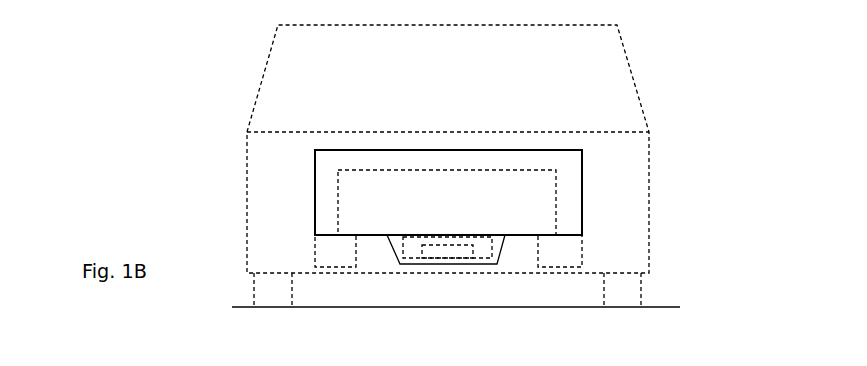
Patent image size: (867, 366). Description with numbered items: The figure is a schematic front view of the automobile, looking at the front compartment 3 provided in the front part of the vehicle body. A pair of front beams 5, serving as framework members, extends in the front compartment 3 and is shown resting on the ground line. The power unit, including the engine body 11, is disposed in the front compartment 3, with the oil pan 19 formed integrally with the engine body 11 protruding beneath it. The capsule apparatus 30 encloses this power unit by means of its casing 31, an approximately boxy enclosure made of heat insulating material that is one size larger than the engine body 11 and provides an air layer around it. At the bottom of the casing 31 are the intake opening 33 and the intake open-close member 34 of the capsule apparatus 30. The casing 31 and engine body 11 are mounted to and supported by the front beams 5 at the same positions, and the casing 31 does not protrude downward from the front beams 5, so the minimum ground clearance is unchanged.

The front compartment 3 is at (297, 150).
The front beams 5 is at (333, 267).
The engine body 11 is at (503, 172).
The oil pan 19 is at (462, 250).
The capsule apparatus 30 is at (587, 170).
The casing 31 is at (443, 148).
The intake opening 33 is at (401, 264).
The intake open-close member 34 is at (447, 294).